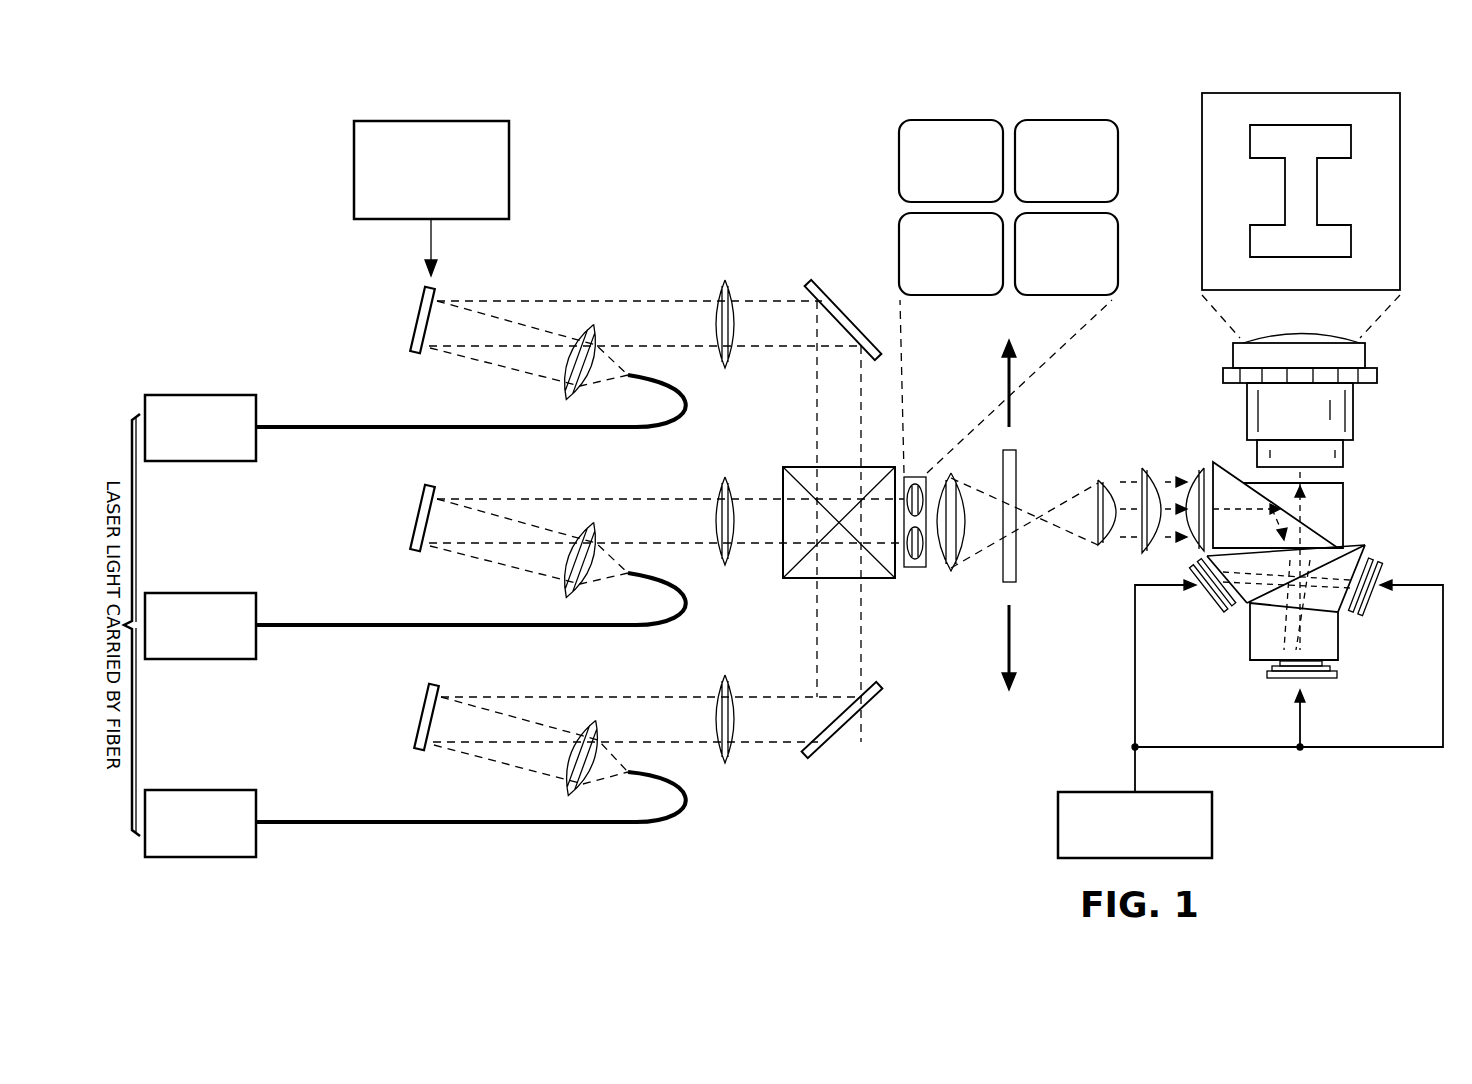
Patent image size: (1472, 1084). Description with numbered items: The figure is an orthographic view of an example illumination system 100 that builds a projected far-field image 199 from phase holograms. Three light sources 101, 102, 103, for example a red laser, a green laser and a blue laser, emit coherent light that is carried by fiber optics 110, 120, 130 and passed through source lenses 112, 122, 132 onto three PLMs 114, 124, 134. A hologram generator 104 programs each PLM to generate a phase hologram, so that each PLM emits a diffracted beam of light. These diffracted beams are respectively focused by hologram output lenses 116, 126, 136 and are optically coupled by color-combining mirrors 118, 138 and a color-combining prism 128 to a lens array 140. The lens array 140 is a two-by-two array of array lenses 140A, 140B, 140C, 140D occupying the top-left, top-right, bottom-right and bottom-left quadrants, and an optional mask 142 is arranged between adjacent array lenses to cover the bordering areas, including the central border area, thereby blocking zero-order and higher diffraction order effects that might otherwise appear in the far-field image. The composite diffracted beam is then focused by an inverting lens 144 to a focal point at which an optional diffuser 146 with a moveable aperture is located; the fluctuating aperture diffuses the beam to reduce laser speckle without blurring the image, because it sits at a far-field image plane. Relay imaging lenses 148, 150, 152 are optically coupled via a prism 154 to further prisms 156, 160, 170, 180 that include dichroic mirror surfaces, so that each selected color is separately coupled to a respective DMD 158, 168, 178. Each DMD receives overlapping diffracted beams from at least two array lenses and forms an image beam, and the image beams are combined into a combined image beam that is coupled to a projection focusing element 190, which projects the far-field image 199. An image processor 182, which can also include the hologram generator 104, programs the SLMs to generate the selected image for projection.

The illumination system 100 is at (166, 181).
The light source 101 is at (200, 395).
The light source 102 is at (200, 660).
The light source 103 is at (200, 858).
The hologram generator 104 is at (354, 170).
The fiber optic 110 is at (320, 425).
The source lens 112 is at (567, 396).
The PLM 114 is at (418, 356).
The hologram output lens 116 is at (725, 280).
The mirror 118 is at (852, 318).
The fiber optic 120 is at (320, 628).
The source lens 122 is at (567, 594).
The PLM 124 is at (418, 553).
The hologram output lens 126 is at (725, 477).
The prism 128 is at (795, 467).
The fiber optic 130 is at (320, 825).
The source lens 132 is at (567, 793).
The PLM 134 is at (420, 753).
The hologram output lens 136 is at (728, 765).
The mirror 138 is at (856, 722).
The lens array 140 is at (962, 207).
The array lens 140A is at (951, 161).
The array lens 140B is at (1066, 161).
The array lens 140C is at (1066, 254).
The array lens 140D is at (951, 254).
The mask 142 is at (898, 212).
The inverting lens 144 is at (952, 573).
The diffuser 146 is at (1017, 475).
The relay imaging lens 148 is at (1100, 547).
The relay imaging lens 150 is at (1150, 475).
The relay imaging lens 152 is at (1200, 470).
The prism 154 is at (1232, 466).
The prism 156 is at (1344, 515).
The DMD 158 is at (1208, 600).
The prism 160 is at (1228, 605).
The DMD 168 is at (1322, 680).
The prism 170 is at (1340, 638).
The DMD 178 is at (1374, 602).
The prism 180 is at (1367, 560).
The image processor 182 is at (1213, 826).
The projection focusing element 190 is at (1368, 357).
The far-field image 199 is at (1400, 192).